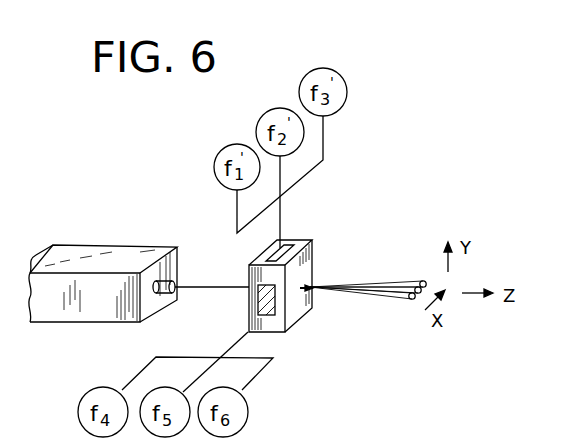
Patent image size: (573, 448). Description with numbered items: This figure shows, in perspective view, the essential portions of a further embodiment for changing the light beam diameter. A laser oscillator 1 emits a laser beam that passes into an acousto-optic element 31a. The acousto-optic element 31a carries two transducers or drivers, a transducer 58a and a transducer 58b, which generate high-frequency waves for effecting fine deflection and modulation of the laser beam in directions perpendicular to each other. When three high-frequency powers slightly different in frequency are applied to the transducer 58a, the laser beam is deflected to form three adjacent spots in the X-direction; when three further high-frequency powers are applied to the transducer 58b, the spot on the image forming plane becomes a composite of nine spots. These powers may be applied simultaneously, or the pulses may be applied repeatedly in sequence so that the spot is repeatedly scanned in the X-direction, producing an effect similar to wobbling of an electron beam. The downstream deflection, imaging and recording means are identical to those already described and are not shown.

The laser oscillator 1 is at (70, 323).
The acousto-optic element 31a is at (272, 341).
The transducer 58a is at (260, 300).
The transducer 58b is at (287, 242).